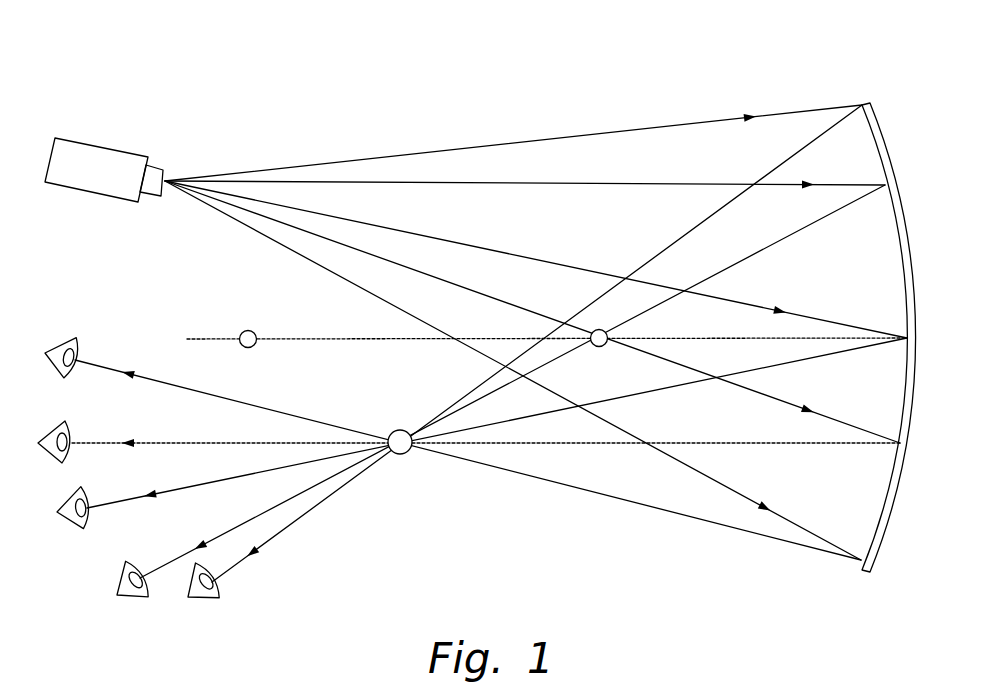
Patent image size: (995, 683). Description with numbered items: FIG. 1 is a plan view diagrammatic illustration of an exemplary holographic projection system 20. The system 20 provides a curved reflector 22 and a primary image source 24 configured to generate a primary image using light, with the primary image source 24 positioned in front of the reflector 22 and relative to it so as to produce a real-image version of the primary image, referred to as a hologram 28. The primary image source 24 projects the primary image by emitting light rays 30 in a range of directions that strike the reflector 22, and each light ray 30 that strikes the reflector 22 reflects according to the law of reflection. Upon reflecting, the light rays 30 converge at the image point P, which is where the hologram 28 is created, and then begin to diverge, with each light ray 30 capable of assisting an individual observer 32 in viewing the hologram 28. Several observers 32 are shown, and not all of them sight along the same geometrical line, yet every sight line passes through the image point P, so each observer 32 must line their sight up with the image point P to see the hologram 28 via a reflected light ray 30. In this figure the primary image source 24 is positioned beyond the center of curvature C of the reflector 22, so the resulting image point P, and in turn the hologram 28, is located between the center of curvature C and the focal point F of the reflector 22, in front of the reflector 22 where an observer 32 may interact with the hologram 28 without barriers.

The holographic projection system 20 is at (782, 63).
The curved reflector 22 is at (885, 143).
The primary image source 24 is at (120, 168).
The hologram 28 is at (402, 460).
The light rays 30 is at (380, 156).
The observer 32 is at (57, 346).
The center of curvature C is at (245, 331).
The focal point F is at (600, 348).
The image point P is at (397, 431).